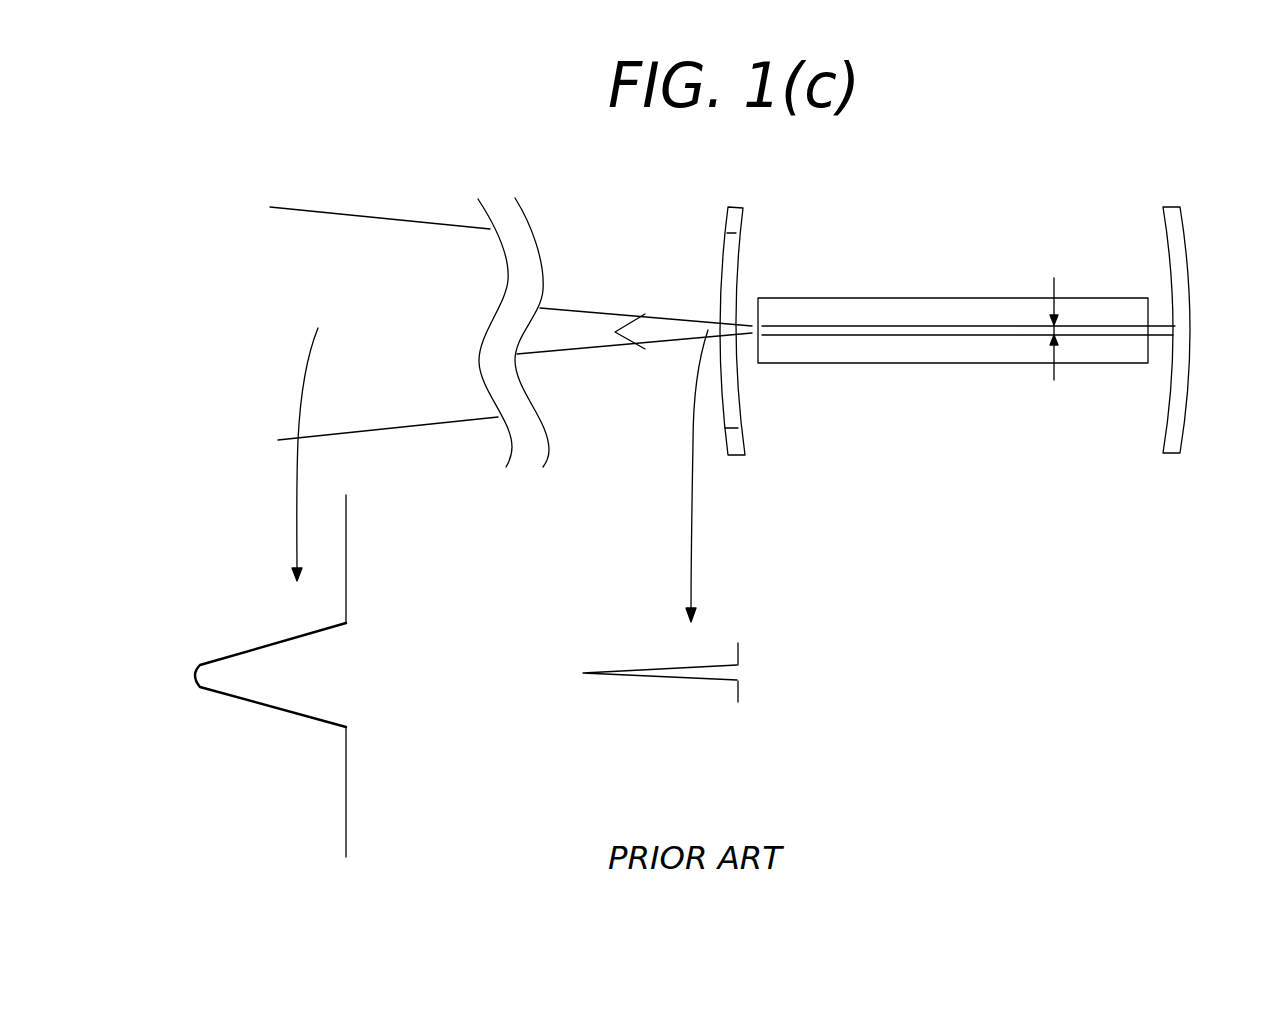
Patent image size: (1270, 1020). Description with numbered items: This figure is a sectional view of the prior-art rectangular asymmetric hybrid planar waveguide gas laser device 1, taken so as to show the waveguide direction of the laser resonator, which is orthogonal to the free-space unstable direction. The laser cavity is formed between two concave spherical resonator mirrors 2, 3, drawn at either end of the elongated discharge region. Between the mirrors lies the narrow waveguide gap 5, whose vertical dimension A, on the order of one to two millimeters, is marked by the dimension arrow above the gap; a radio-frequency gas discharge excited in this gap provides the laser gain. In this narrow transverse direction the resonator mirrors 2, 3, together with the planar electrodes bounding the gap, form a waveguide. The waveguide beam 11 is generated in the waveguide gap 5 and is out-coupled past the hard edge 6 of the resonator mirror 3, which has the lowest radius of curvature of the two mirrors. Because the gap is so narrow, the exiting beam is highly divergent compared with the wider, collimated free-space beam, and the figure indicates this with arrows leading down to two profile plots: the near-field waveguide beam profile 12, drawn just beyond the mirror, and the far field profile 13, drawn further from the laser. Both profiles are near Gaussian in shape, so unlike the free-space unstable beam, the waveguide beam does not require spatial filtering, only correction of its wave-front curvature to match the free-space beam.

The rectangular asymmetric hybrid planar waveguide gas laser device 1 is at (990, 233).
The resonator mirror 2 is at (1175, 447).
The resonator mirror 3 is at (728, 223).
The waveguide gap 5 is at (995, 327).
The hard edge 6 is at (732, 420).
The waveguide beam 11 is at (598, 338).
The near-field waveguide beam profile 12 is at (708, 677).
The far field beam profile 13 is at (288, 707).
The vertical dimension A is at (1055, 315).